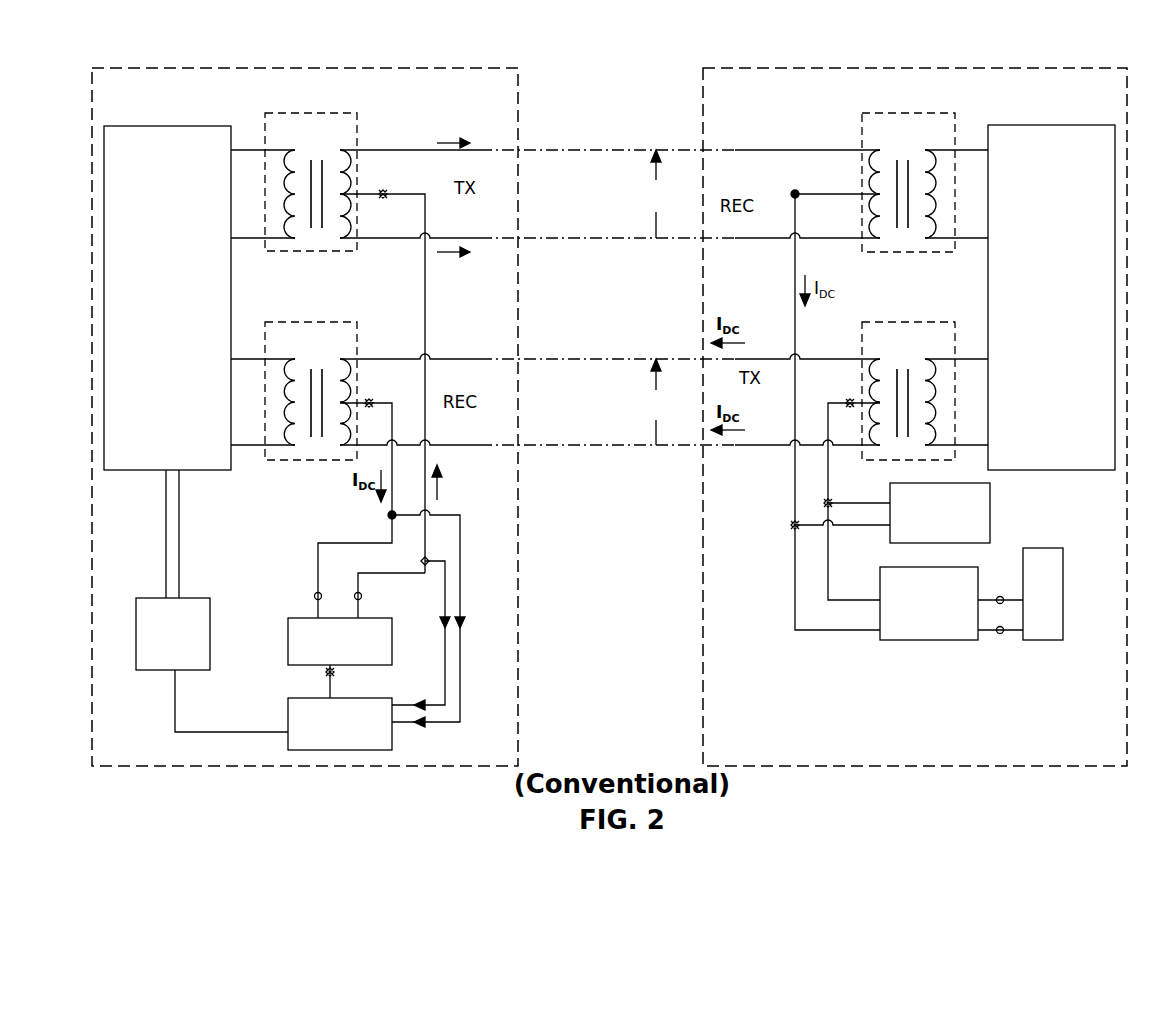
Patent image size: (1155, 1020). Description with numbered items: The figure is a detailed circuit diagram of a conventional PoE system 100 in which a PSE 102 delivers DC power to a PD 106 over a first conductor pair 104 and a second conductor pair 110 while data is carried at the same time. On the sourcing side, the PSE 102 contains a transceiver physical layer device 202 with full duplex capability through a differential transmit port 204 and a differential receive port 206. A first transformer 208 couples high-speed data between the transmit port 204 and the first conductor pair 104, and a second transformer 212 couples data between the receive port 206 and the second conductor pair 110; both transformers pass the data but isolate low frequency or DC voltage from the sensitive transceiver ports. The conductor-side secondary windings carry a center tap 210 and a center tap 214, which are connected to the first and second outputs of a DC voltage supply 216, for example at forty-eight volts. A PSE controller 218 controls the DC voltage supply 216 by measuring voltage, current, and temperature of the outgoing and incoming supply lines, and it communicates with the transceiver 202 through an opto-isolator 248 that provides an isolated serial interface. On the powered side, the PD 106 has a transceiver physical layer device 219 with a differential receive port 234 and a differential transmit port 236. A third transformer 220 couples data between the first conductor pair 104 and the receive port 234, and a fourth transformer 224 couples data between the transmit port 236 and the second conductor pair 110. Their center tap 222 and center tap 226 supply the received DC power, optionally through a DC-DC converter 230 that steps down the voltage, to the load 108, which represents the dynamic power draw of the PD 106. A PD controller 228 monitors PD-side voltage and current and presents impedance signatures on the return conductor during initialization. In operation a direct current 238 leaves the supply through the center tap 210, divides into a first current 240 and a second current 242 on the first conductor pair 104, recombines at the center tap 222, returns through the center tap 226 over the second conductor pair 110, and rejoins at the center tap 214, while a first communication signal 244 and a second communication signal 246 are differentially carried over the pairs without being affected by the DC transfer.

The PoE system 100 is at (593, 110).
The PSE 102 is at (292, 68).
The first conductor pair 104 is at (576, 208).
The PD 106 is at (945, 68).
The load 108 is at (1063, 578).
The second conductor pair 110 is at (577, 420).
The transceiver physical layer device 202 is at (167, 298).
The differential transmit port 204 is at (231, 190).
The differential receive port 206 is at (231, 386).
The first transformer 208 is at (372, 182).
The center tap 210 is at (383, 194).
The second transformer 212 is at (372, 391).
The center tap 214 is at (369, 403).
The DC voltage supply 216 is at (288, 636).
The PSE controller 218 is at (288, 718).
The transceiver physical layer device 219 is at (1051, 297).
The third transformer 220 is at (845, 182).
The center tap 222 is at (795, 194).
The fourth transformer 224 is at (845, 391).
The center tap 226 is at (850, 403).
The PD controller 228 is at (990, 511).
The DC-DC converter 230 is at (908, 648).
The differential receive port 234 is at (988, 192).
The differential transmit port 236 is at (988, 384).
The direct current 238 is at (454, 490).
The first current 240 is at (437, 126).
The second current 242 is at (468, 283).
The first communication signal 244 is at (656, 194).
The second communication signal 246 is at (656, 402).
The opto-isolator 248 is at (203, 598).